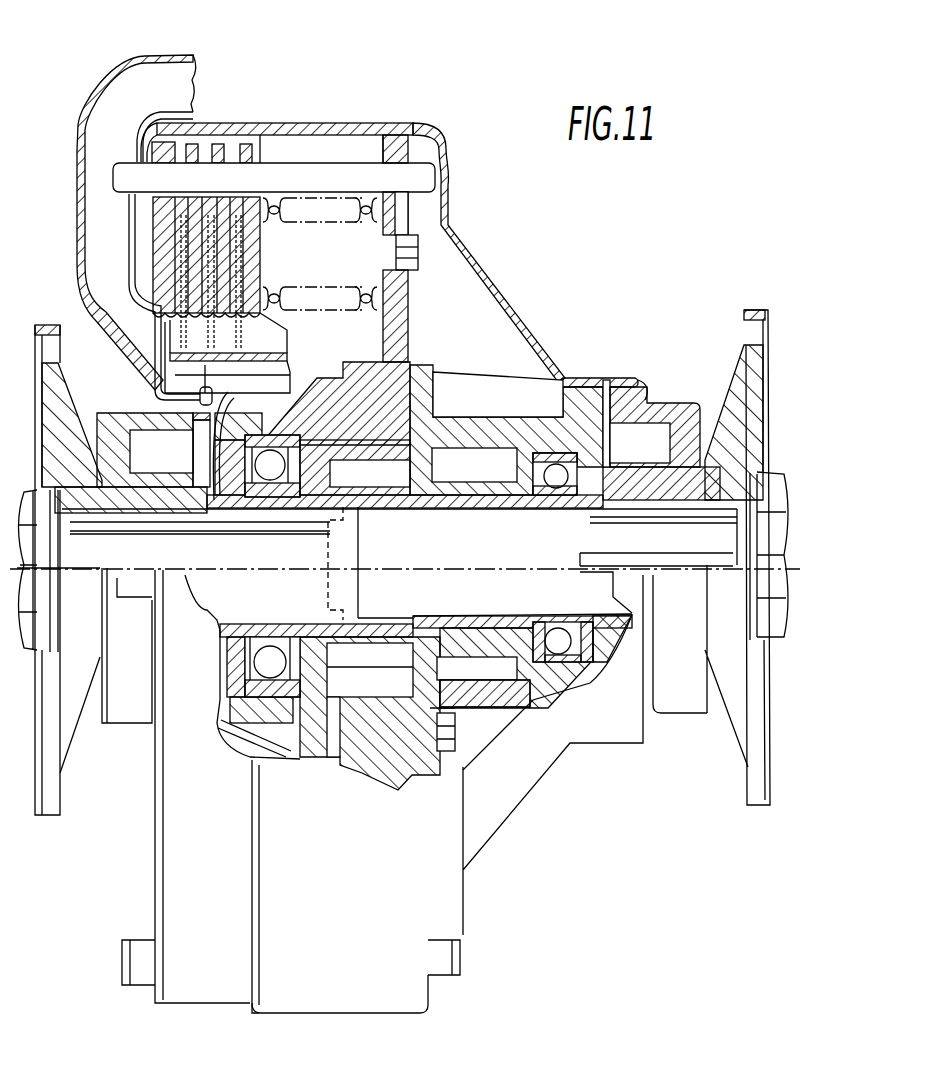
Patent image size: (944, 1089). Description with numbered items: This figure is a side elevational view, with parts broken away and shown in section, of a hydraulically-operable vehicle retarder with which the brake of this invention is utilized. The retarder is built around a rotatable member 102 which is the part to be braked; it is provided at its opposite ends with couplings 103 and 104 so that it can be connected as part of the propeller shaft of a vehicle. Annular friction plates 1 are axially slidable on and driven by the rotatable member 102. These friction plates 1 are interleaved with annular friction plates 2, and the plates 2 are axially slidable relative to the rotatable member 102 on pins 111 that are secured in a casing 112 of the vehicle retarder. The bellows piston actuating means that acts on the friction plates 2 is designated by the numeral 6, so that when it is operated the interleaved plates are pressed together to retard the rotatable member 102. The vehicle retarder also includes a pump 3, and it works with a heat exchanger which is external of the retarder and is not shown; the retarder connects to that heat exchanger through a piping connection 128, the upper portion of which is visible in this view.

The piping connection 128 is at (132, 62).
The annular friction plates 2 is at (246, 144).
The pins 111 is at (274, 179).
The annular friction plates 1 is at (230, 270).
The bellows piston actuating means 6 is at (352, 298).
The pump 3 is at (378, 473).
The rotatable member 102 is at (405, 563).
The coupling 103 is at (53, 792).
The coupling 104 is at (757, 755).
The casing 112 is at (362, 790).